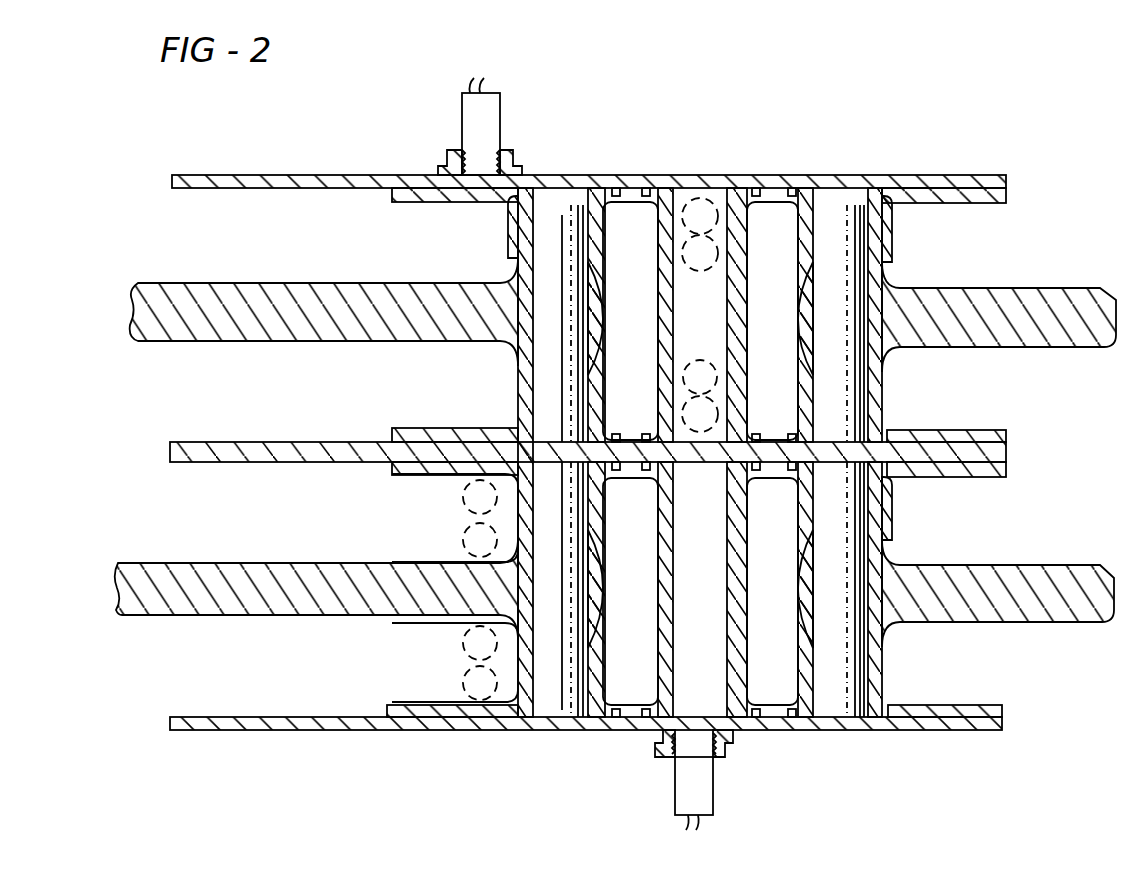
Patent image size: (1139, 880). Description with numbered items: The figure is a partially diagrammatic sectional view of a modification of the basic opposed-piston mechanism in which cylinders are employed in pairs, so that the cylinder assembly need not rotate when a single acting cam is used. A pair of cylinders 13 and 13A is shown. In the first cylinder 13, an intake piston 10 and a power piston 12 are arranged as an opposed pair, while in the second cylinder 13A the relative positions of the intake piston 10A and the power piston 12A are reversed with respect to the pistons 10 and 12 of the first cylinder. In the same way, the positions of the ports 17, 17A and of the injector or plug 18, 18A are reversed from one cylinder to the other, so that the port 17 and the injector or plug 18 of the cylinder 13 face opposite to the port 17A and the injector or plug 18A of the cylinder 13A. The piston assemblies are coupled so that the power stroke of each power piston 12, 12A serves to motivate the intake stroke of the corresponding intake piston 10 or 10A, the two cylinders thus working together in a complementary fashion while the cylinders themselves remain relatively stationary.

The intake piston 10 is at (590, 190).
The intake piston 10A is at (806, 712).
The power piston 12 is at (820, 190).
The power piston 12A is at (627, 718).
The combustion cylinder 13 is at (765, 190).
The combustion cylinder 13A is at (762, 722).
The port 17 is at (700, 190).
The port 17A is at (460, 518).
The injector or plug 18 is at (472, 122).
The injector or plug 18A is at (700, 796).